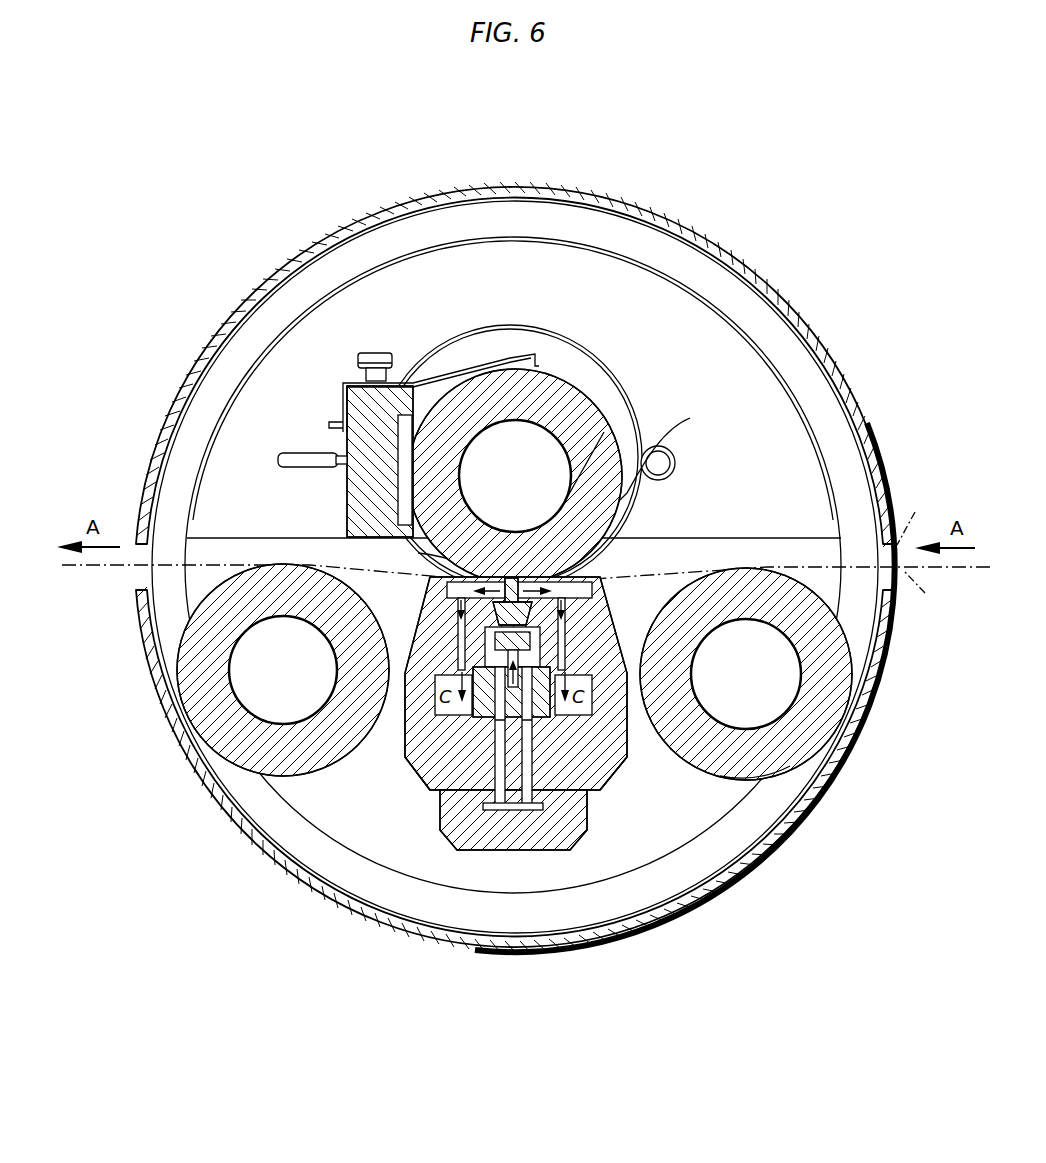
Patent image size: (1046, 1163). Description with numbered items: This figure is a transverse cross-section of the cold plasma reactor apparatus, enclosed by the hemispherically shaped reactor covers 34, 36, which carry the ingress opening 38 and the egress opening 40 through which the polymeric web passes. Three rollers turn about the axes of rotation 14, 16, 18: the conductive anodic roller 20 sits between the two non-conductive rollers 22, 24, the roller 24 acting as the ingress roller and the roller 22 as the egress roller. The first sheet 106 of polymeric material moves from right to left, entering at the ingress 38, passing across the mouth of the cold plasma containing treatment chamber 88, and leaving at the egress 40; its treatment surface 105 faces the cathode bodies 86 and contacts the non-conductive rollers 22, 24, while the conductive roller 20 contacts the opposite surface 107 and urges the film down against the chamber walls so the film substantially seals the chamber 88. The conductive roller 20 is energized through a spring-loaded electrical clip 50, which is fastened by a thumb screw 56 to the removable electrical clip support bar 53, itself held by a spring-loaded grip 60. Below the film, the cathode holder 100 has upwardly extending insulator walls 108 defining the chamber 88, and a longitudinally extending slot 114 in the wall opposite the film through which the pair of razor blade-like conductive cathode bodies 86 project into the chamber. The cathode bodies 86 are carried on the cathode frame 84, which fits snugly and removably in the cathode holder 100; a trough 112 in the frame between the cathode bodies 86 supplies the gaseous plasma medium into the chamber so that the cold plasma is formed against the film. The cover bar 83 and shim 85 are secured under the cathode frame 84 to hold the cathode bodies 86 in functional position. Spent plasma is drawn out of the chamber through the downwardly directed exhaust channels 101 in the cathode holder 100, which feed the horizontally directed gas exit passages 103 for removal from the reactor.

The reactor cover 34 is at (639, 200).
The non-conductive roller 22 is at (205, 710).
The egress opening 40 is at (143, 575).
The ingress opening 38 is at (882, 571).
The reactor cover 36 is at (432, 838).
The treatment chamber 88 is at (623, 538).
The opposite surface 107 is at (338, 558).
The housing walls 108 is at (620, 570).
The first sheet of polymeric material 106 is at (920, 513).
The treatment surface 105 is at (933, 591).
The conductive roller 20 is at (641, 422).
The longitudinally extending slot 114 is at (676, 464).
The conductive cathode bodies 86 is at (405, 557).
The axis of rotation 14 is at (280, 684).
The axis of rotation 18 is at (751, 686).
The axis of rotation 16 is at (520, 510).
The trough 112 is at (604, 432).
The electrical clip support bar 53 is at (357, 484).
The spring-loaded electrical clip 50 is at (458, 366).
The thumb screw 56 is at (372, 353).
The spring-loaded grip 60 is at (310, 458).
The cathode holder 100 is at (420, 777).
The cover bar 83 is at (578, 851).
The gas exit passage 103 is at (412, 752).
The gaseous medium exhaust channel 101 is at (455, 602).
The cathode frame 84 is at (490, 777).
The shim 85 is at (508, 851).
The non-conductive roller 24 is at (755, 762).